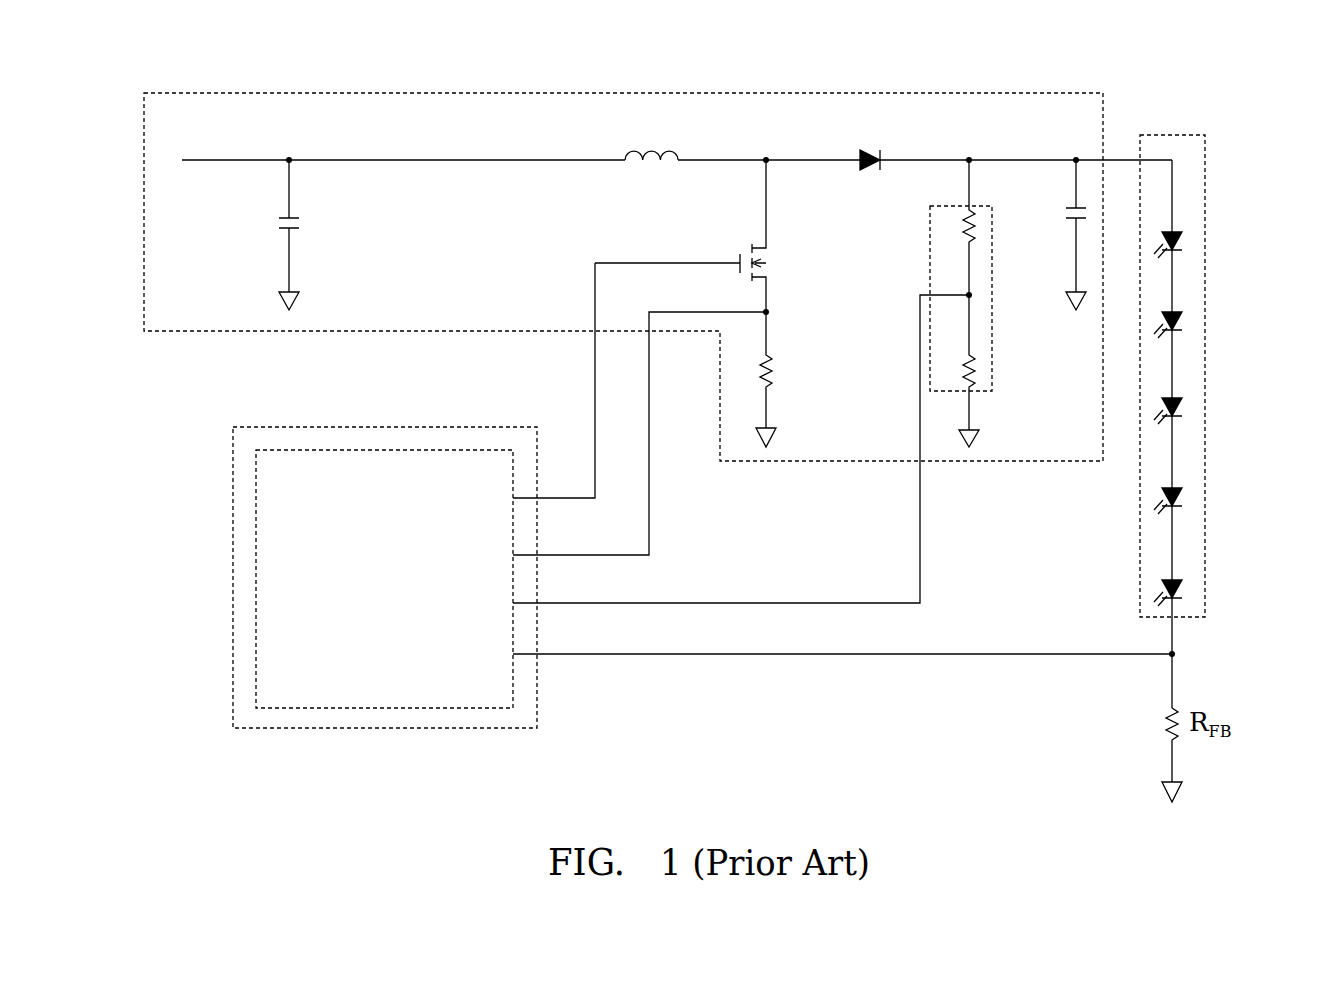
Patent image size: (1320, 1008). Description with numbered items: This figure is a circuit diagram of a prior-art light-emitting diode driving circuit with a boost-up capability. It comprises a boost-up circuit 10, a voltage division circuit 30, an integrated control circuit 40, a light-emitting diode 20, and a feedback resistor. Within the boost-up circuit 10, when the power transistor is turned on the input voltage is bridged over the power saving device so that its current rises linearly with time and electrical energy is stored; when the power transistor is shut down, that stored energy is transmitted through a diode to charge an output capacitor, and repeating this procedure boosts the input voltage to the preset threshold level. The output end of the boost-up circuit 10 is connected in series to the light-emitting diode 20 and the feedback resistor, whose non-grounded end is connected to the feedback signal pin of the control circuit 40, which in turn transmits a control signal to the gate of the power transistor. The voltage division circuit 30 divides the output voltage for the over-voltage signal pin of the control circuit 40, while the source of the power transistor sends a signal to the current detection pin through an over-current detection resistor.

The boost-up circuit 10 is at (520, 93).
The light-emitting diode 20 is at (1205, 192).
The voltage division circuit 30 is at (992, 366).
The integrated control circuit 40 is at (233, 568).